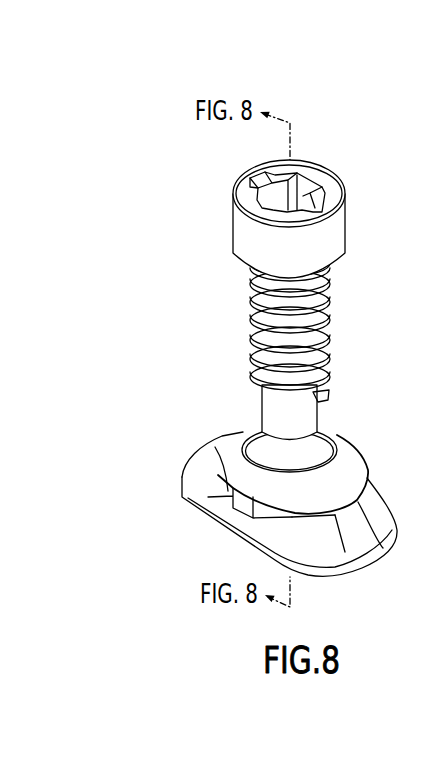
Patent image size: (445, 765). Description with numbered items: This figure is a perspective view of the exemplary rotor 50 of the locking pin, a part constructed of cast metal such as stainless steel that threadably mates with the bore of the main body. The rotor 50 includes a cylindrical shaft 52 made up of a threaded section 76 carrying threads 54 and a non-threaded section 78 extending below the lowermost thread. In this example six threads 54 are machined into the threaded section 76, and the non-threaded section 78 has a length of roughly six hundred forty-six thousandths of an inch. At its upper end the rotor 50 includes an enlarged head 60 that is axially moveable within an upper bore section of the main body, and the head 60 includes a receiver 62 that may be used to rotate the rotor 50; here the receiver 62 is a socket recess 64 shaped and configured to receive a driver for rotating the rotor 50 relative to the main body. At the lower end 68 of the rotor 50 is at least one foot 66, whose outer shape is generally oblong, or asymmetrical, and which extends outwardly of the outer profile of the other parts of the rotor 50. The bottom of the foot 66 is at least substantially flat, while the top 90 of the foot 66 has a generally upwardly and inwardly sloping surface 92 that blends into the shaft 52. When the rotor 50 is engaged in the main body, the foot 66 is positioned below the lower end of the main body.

The rotor 50 is at (291, 261).
The shaft 52 is at (318, 422).
The threads 54 is at (282, 332).
The head 60 is at (291, 180).
The receiver 62 is at (297, 175).
The socket recess 64 is at (312, 192).
The foot 66 is at (182, 476).
The lower end 68 is at (183, 418).
The threaded section 76 is at (250, 320).
The non-threaded section 78 is at (260, 412).
The top 90 is at (281, 461).
The sloping surface 92 is at (347, 460).